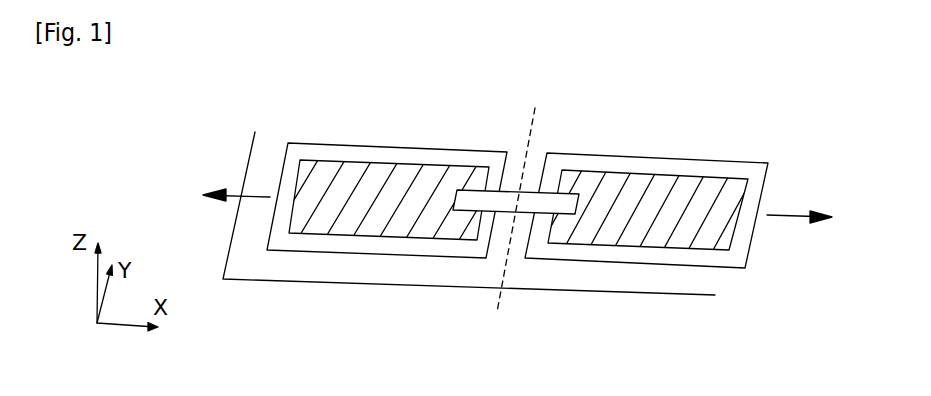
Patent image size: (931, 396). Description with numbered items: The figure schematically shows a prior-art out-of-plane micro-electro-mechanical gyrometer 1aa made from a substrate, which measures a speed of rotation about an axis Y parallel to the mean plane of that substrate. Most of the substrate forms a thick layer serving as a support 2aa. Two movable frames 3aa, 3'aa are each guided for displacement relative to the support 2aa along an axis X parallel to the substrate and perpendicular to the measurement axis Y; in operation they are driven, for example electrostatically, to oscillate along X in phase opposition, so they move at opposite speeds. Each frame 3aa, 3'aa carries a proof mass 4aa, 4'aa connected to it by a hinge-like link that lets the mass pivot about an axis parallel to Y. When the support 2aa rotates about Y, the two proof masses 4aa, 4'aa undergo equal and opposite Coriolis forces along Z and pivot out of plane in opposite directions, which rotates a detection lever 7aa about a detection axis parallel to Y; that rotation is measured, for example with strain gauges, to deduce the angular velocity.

The gyrometer 1aa is at (295, 315).
The support 2aa is at (512, 291).
The movable frame 3aa is at (336, 144).
The proof mass 4aa is at (433, 188).
The detection lever 7aa is at (533, 192).
The movable frame 3'aa is at (646, 181).
The proof mass 4'aa is at (653, 227).